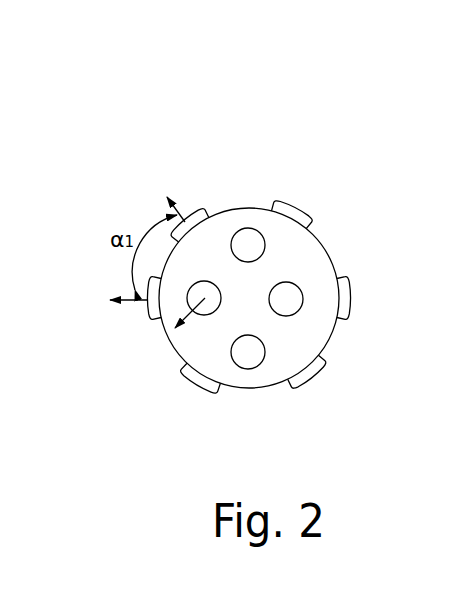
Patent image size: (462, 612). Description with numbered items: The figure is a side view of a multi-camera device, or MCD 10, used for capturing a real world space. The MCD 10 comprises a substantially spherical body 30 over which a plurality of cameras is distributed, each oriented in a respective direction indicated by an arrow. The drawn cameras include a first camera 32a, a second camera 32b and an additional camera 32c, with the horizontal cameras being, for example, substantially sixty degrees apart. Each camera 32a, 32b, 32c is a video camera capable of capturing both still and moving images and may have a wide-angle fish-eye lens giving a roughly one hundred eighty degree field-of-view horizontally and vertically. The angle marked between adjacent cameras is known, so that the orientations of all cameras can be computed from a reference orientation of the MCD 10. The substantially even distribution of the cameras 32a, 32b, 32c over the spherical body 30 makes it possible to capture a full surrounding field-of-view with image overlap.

The multi-camera device (MCD) 10 is at (158, 107).
The substantially spherical body 30 is at (323, 258).
The first camera 32a is at (198, 212).
The second camera 32b is at (152, 315).
The additional camera 32c is at (202, 314).